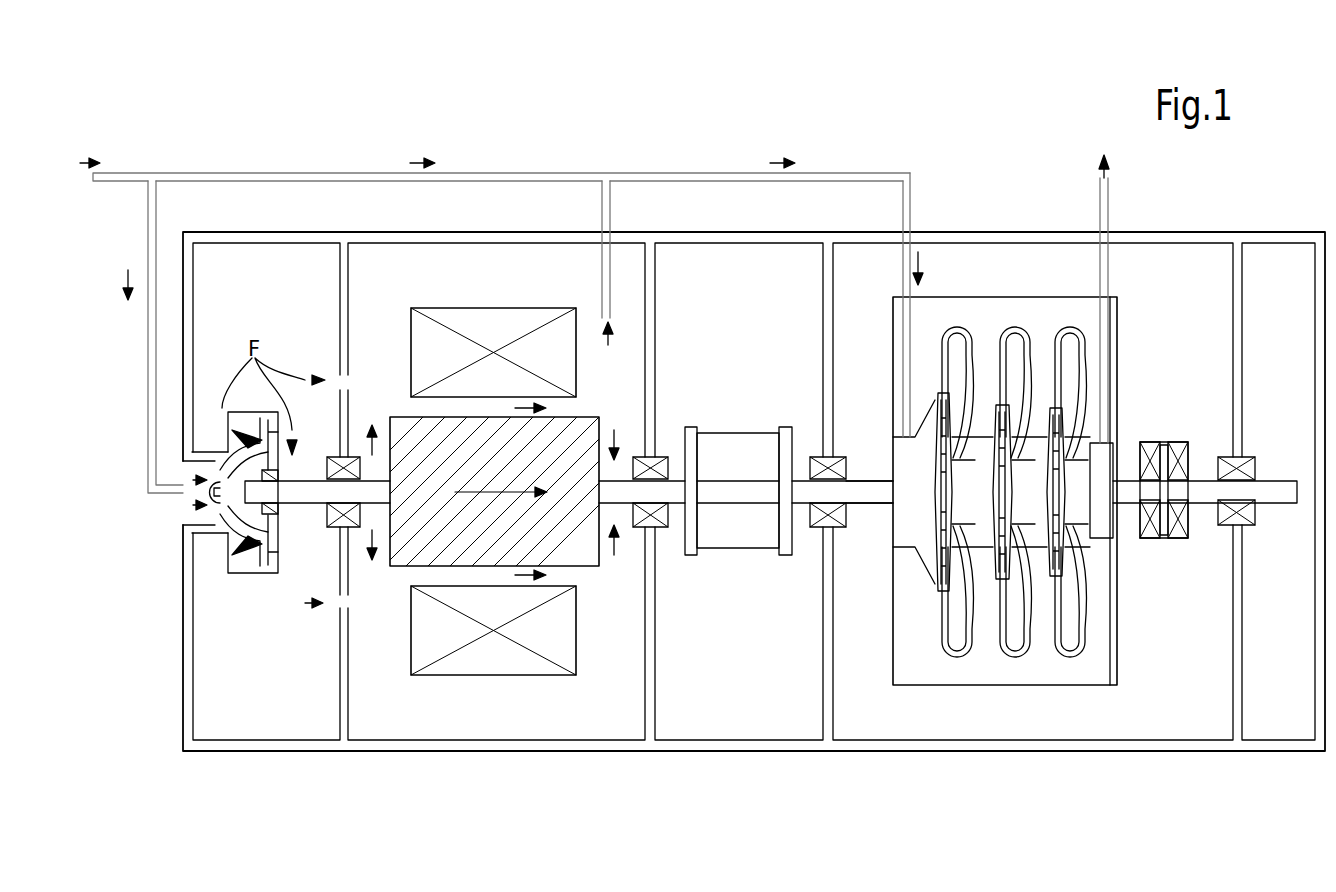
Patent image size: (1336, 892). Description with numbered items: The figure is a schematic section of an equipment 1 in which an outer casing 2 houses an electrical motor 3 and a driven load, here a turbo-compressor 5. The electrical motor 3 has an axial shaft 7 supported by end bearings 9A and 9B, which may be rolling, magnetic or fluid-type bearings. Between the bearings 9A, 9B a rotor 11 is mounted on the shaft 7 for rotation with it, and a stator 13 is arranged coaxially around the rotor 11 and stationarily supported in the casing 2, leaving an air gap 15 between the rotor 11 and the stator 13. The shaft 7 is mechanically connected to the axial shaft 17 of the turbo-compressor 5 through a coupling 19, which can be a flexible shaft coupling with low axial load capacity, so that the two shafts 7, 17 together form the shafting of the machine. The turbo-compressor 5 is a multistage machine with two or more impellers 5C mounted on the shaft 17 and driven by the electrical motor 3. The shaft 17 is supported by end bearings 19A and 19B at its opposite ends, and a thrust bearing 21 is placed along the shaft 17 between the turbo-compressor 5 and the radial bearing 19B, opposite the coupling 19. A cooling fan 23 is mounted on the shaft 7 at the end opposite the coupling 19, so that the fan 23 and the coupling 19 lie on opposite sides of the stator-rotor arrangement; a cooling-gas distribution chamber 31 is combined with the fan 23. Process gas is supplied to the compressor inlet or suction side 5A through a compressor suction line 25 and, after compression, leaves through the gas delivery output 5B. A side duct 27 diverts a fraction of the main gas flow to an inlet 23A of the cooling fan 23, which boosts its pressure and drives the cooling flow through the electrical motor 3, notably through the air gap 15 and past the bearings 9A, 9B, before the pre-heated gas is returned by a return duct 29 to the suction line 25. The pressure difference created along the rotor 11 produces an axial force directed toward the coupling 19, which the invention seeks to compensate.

The equipment 1 is at (1022, 152).
The outer casing 2 is at (715, 767).
The electrical motor 3 is at (505, 760).
The turbo-compressor 5 is at (1010, 767).
The compressor inlet or suction side 5A is at (907, 297).
The gas delivery output 5B is at (1110, 297).
The impellers 5C is at (935, 425).
The axial shaft 7 is at (673, 497).
The end bearing 9A is at (330, 517).
The end bearing 9B is at (660, 458).
The rotor 11 is at (488, 533).
The stator 13 is at (470, 323).
The air gap 15 is at (493, 410).
The axial shaft 17 is at (880, 487).
The coupling 19 is at (737, 540).
The end bearing 19A is at (810, 460).
The end bearing 19B is at (1248, 460).
The thrust bearing 21 is at (1165, 535).
The cooling fan 23 is at (229, 574).
The inlet of the cooling fan 23A is at (197, 512).
The compressor suction line 25 is at (300, 175).
The side duct 27 is at (148, 238).
The return duct 29 is at (603, 182).
The cooling-gas distribution chamber 31 is at (265, 462).